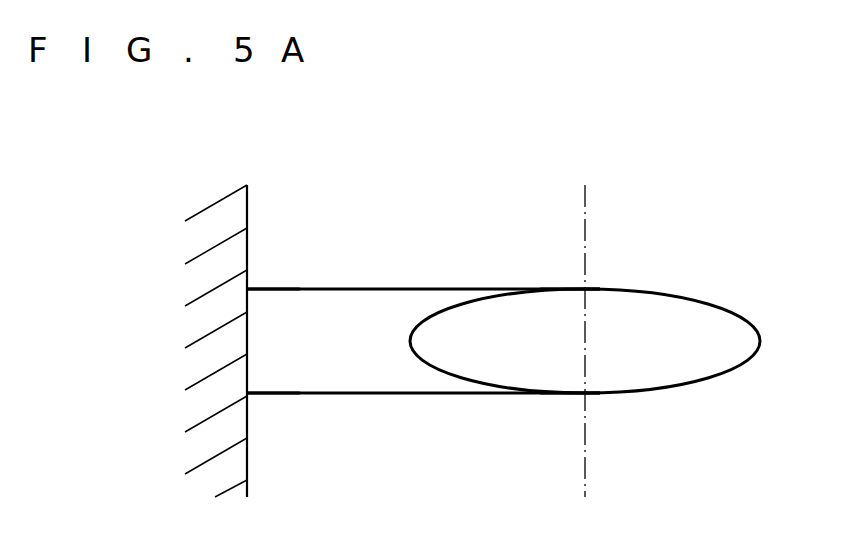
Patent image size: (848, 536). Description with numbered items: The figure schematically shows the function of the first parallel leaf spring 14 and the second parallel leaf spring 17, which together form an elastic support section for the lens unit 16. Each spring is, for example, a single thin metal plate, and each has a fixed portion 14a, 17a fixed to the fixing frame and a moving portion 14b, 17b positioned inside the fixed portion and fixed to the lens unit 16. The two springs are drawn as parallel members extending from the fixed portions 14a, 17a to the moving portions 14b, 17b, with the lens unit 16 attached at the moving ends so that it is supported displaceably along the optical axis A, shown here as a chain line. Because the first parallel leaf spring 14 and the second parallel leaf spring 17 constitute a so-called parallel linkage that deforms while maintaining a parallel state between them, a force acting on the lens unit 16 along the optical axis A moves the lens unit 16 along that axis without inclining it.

The first parallel leaf spring 14 is at (413, 396).
The fixed portion 14a is at (251, 397).
The moving portion 14b is at (582, 397).
The lens unit 16 is at (724, 307).
The second parallel leaf spring 17 is at (413, 288).
The fixed portion 17a is at (251, 286).
The moving portion 17b is at (582, 286).
The optical axis A is at (585, 230).